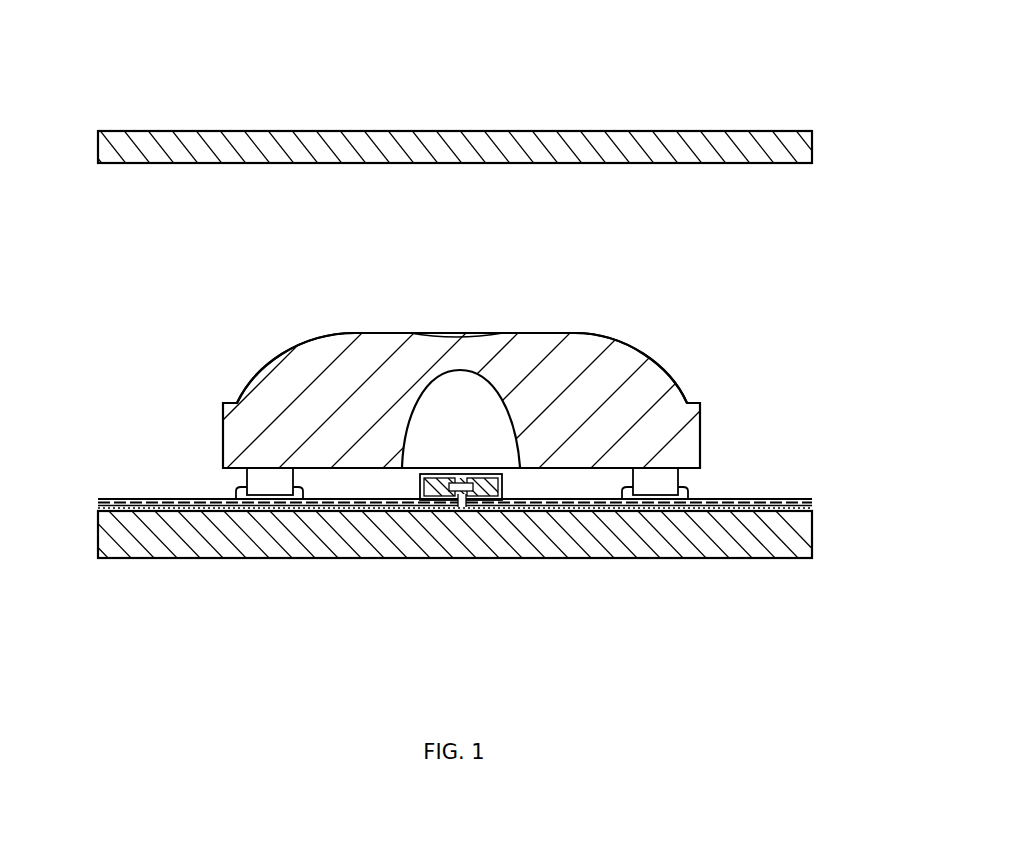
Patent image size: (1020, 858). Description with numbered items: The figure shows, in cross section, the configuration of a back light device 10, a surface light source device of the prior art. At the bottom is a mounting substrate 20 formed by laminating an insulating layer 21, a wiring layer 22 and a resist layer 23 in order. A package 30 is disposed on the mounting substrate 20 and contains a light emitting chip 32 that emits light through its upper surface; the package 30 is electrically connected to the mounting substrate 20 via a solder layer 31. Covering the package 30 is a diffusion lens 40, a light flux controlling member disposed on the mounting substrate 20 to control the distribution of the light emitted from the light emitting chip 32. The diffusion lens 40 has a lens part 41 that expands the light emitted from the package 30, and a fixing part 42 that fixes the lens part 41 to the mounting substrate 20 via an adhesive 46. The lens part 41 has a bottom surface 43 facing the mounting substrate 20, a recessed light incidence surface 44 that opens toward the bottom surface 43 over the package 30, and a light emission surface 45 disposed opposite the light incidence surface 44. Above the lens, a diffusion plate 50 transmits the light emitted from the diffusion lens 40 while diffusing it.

The back light device 10 is at (598, 44).
The mounting substrate 20 is at (441, 573).
The insulating layer 21 is at (207, 533).
The wiring layer 22 is at (172, 506).
The resist layer 23 is at (140, 501).
The package 30 is at (434, 557).
The solder layer 31 is at (425, 494).
The light emitting chip 32 is at (457, 492).
The diffusion lens 40 is at (482, 489).
The lens part 41 is at (482, 474).
The fixing part 42 is at (267, 487).
The bottom surface 43 is at (567, 470).
The light incidence surface 44 is at (497, 440).
The light emission surface 45 is at (610, 340).
The adhesive 46 is at (294, 498).
The diffusion plate 50 is at (322, 137).